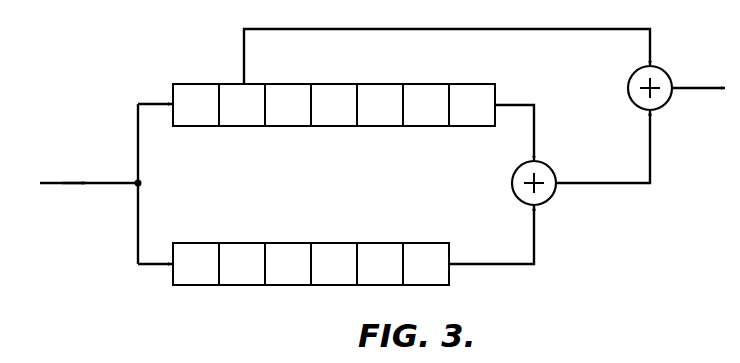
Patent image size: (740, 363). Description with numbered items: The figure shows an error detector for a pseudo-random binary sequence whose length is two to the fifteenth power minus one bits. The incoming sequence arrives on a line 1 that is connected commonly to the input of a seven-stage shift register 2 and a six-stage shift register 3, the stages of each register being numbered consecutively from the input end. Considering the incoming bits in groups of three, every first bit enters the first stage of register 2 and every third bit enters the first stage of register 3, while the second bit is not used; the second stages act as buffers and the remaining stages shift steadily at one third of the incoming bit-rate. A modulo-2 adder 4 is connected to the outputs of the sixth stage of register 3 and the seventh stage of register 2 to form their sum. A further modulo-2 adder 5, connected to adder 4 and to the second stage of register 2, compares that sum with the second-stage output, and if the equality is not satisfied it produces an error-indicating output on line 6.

The line 1 is at (100, 181).
The seven-stage shift register 2 is at (375, 126).
The six-stage shift register 3 is at (380, 242).
The modulo-2 adder 4 is at (552, 168).
The further modulo-2 adder 5 is at (663, 72).
The line 6 is at (718, 93).